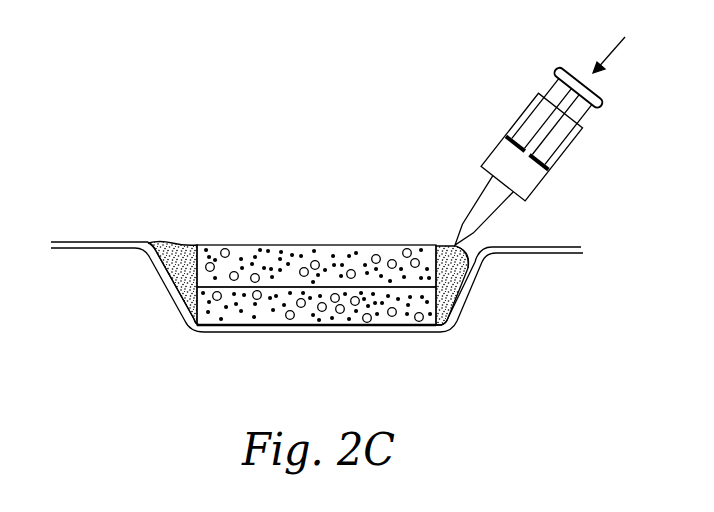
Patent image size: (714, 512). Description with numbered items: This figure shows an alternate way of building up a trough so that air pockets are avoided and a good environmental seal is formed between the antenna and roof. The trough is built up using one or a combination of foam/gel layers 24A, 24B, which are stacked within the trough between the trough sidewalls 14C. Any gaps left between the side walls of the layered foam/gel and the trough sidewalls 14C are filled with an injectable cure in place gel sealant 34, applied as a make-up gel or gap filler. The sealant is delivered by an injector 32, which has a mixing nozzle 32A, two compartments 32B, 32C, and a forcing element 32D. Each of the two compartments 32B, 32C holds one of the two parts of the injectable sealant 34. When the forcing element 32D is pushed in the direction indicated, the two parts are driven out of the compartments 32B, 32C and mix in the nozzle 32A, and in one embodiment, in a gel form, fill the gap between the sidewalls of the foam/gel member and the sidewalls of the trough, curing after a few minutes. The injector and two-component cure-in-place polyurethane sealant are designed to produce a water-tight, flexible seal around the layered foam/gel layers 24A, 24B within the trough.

The trough sidewalls 14C is at (160, 287).
The injectable cure in place gel sealant 34 is at (175, 243).
The foam/gel layer 24A is at (330, 313).
The foam/gel layer 24B is at (325, 250).
The injector 32 is at (554, 145).
The mixing nozzle 32A is at (490, 215).
The compartment 32B is at (498, 157).
The compartment 32C is at (532, 180).
The forcing element 32D is at (592, 87).